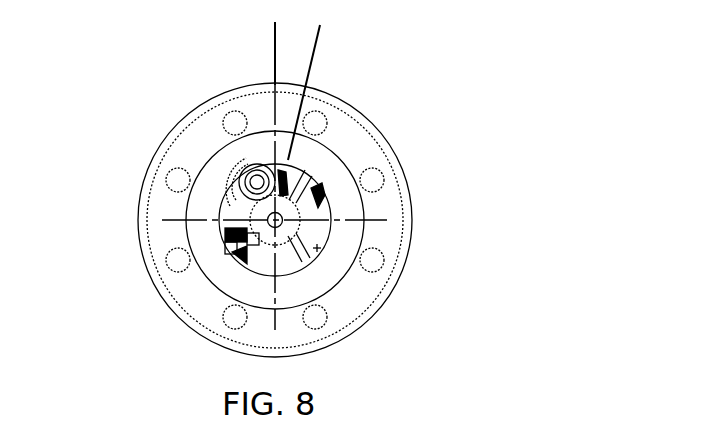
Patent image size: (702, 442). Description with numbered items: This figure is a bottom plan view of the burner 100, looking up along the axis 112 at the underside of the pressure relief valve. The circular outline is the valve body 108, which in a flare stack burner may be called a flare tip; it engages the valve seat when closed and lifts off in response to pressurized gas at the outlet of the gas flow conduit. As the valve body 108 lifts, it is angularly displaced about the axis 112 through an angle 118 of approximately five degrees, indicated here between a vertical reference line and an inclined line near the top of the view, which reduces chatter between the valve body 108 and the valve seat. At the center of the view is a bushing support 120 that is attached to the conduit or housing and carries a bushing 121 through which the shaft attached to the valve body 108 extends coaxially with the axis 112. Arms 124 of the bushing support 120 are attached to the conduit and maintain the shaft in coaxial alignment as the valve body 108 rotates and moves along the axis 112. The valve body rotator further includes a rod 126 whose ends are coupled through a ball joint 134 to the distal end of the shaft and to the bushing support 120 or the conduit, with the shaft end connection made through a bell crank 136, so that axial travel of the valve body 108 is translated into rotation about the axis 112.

The burner 100 is at (453, 73).
The valve body 108 is at (148, 180).
The axis 112 is at (272, 224).
The angle 118 is at (315, 45).
The bushing support 120 is at (289, 240).
The bushing 121 is at (293, 230).
The arms 124 is at (298, 263).
The rod 126 is at (246, 174).
The ball joint 134 is at (250, 193).
The bell crank 136 is at (298, 180).